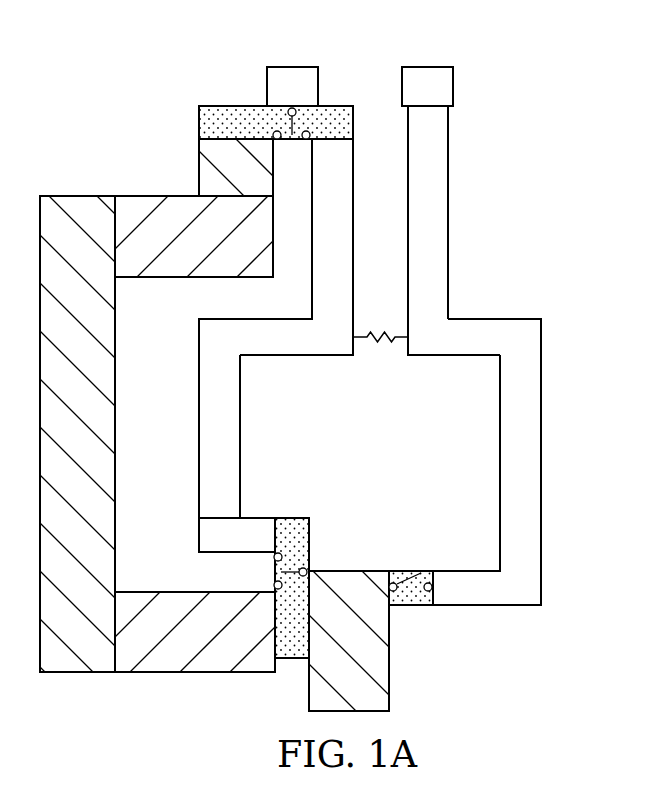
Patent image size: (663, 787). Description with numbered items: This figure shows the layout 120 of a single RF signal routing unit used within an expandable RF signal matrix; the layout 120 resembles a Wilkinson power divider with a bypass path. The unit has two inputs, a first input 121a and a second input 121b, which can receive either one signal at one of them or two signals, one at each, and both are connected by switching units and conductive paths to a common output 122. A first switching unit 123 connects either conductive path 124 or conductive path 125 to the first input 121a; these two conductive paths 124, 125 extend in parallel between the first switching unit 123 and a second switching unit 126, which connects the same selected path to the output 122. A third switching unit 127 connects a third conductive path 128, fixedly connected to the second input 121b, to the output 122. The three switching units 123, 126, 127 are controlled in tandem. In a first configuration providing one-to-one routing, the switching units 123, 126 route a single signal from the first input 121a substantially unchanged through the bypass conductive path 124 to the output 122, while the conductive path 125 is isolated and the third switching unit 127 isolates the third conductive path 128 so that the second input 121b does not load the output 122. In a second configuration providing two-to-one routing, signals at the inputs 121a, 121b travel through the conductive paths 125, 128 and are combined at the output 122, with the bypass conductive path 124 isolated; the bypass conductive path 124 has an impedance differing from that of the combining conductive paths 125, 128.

The layout 120 is at (468, 635).
The first input 121a is at (292, 75).
The second input 121b is at (428, 75).
The output 122 is at (308, 687).
The first switching unit 123 is at (232, 112).
The bypass conductive path 124 is at (77, 205).
The conductive path 125 is at (292, 345).
The second switching unit 126 is at (293, 518).
The third switching unit 127 is at (410, 600).
The third conductive path 128 is at (455, 345).